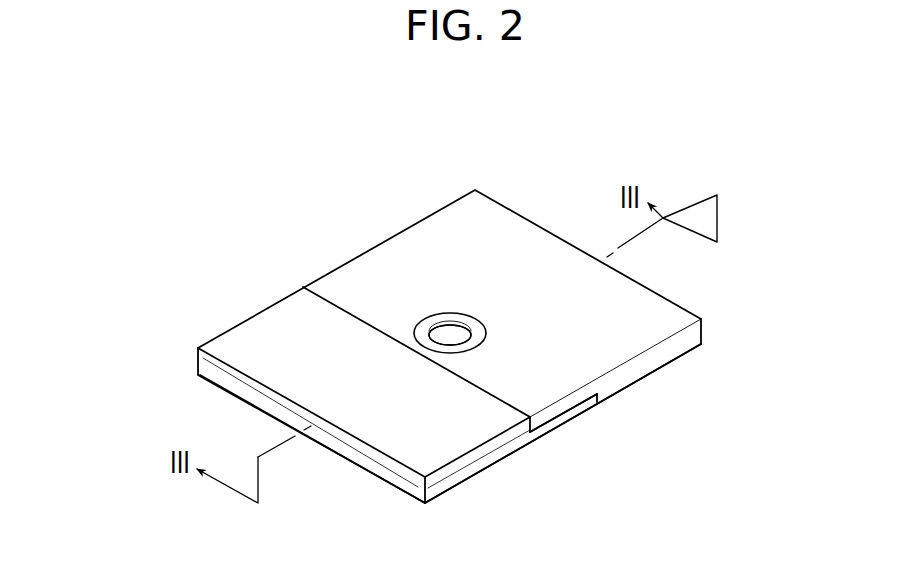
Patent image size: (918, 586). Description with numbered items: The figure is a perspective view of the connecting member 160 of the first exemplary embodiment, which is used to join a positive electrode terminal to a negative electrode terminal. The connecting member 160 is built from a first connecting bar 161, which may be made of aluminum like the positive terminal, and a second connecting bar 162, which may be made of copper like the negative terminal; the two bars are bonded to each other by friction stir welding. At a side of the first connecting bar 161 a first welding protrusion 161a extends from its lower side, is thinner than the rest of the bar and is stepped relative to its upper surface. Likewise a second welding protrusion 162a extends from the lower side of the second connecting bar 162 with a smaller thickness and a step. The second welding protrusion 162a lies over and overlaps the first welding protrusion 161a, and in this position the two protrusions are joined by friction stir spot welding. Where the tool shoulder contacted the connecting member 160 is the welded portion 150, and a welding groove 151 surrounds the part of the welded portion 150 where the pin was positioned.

The welded portion 150 is at (468, 321).
The welding groove 151 is at (443, 333).
The connecting member 160 is at (339, 258).
The first connecting bar 161 is at (455, 475).
The second connecting bar 162 is at (655, 362).
The first welding protrusion 161a is at (557, 423).
The second welding protrusion 162a is at (568, 400).